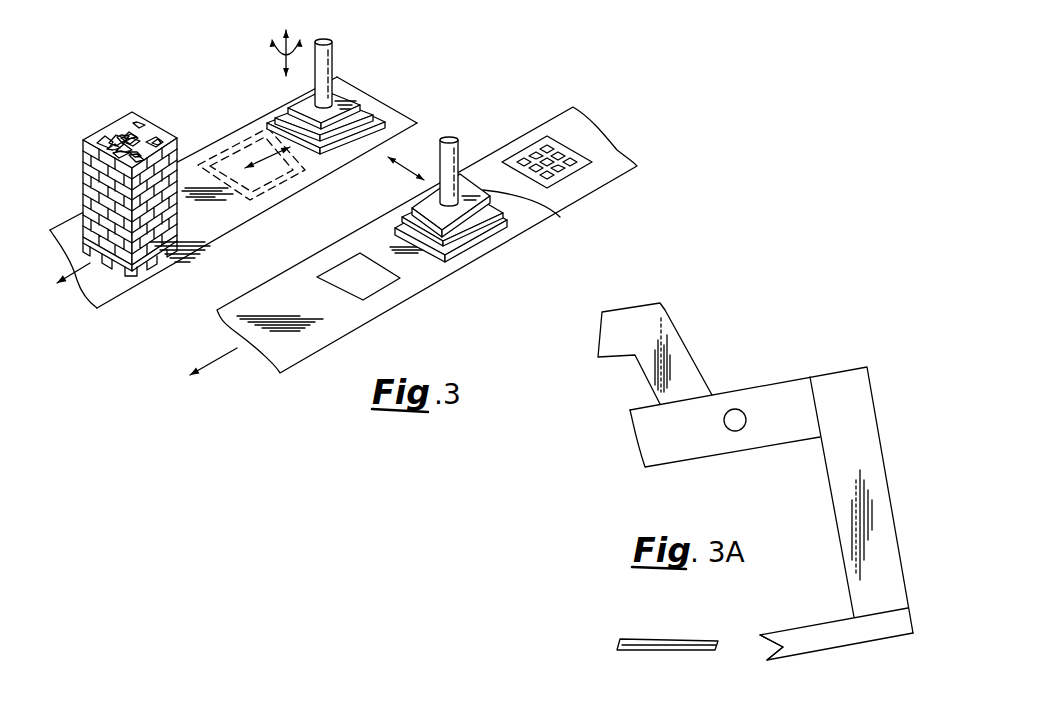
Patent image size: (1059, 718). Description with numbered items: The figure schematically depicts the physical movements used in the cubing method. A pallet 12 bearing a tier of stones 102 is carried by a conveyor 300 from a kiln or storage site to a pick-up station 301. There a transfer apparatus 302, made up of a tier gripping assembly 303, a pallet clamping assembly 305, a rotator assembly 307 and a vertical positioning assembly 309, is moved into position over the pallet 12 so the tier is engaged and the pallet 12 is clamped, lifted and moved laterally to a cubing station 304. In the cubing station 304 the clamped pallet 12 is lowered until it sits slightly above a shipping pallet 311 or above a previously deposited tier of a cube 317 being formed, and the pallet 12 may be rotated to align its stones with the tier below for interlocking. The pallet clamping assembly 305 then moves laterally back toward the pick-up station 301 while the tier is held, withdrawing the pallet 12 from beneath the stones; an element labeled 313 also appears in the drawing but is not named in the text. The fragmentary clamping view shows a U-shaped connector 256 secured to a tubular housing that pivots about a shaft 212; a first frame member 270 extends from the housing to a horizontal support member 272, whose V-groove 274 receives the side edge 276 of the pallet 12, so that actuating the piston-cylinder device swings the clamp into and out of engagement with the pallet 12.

In FIG. 3, the pallet 12 is at (235, 143).
In FIG. 3A, the pallet 12 is at (678, 641).
In FIG. 3, the tier of stones 102 is at (558, 143).
In FIG. 3A, the shaft 212 is at (736, 414).
In FIG. 3A, the U-shaped connector 256 is at (661, 316).
In FIG. 3A, the first frame member 270 is at (857, 440).
In FIG. 3A, the horizontal support member 272 is at (838, 636).
In FIG. 3A, the V-groove 274 is at (762, 647).
In FIG. 3A, the side edge of the pallet 276 is at (715, 639).
In FIG. 3, the conveyor 300 is at (608, 168).
In FIG. 3, the pick-up station 301 is at (452, 258).
In FIG. 3, the transfer apparatus 302 is at (344, 42).
In FIG. 3, the tier gripping assembly 303 is at (498, 222).
In FIG. 3, the cubing station 304 is at (371, 100).
In FIG. 3, the pallet clamping assembly 305 is at (388, 116).
In FIG. 3, the rotator assembly 307 is at (510, 213).
In FIG. 3, the vertical positioning assembly 309 is at (460, 157).
In FIG. 3, the shipping pallet 311 is at (141, 258).
In FIG. 3, the conveyor 313 is at (222, 213).
In FIG. 3, the cube 317 is at (83, 162).